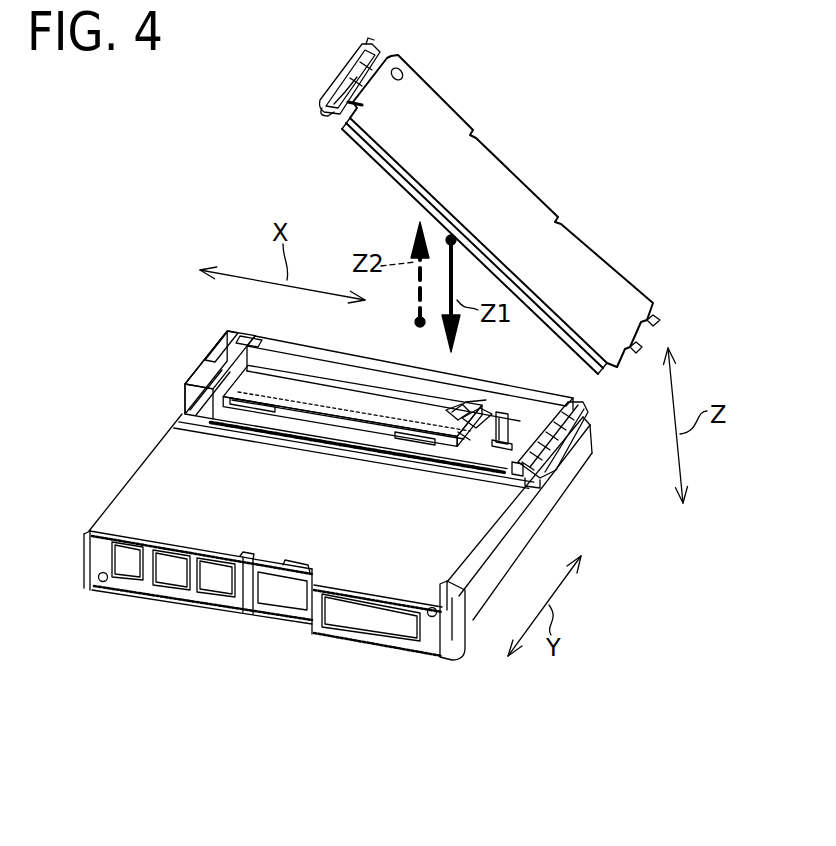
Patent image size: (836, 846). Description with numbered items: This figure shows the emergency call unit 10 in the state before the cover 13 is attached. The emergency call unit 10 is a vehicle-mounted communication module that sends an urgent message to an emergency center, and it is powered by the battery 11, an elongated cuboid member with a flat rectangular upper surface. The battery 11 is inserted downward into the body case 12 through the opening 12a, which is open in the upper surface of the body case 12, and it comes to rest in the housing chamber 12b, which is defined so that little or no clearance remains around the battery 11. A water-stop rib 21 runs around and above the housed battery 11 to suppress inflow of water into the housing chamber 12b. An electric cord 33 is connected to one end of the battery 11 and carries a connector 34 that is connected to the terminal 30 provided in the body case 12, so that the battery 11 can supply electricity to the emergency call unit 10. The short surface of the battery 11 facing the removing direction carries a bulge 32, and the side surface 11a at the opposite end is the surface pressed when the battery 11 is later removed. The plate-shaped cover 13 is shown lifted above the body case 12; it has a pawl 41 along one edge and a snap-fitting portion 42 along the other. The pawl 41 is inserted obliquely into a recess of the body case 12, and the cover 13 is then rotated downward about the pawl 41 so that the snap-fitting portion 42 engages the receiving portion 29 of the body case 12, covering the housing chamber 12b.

The emergency call unit 10 is at (450, 672).
The battery 11 is at (347, 388).
The side surface 11a is at (452, 410).
The body case 12 is at (168, 432).
The opening 12a is at (222, 343).
The housing chamber 12b is at (213, 362).
The cover 13 is at (448, 110).
The water-stop rib 21 is at (190, 408).
The receiving portion 29 is at (187, 376).
The terminal 30 is at (553, 466).
The bulge 32 is at (262, 352).
The electric cord 33 is at (478, 413).
The connector 34 is at (508, 415).
The pawl 41 is at (655, 330).
The snap-fitting portion 42 is at (340, 90).